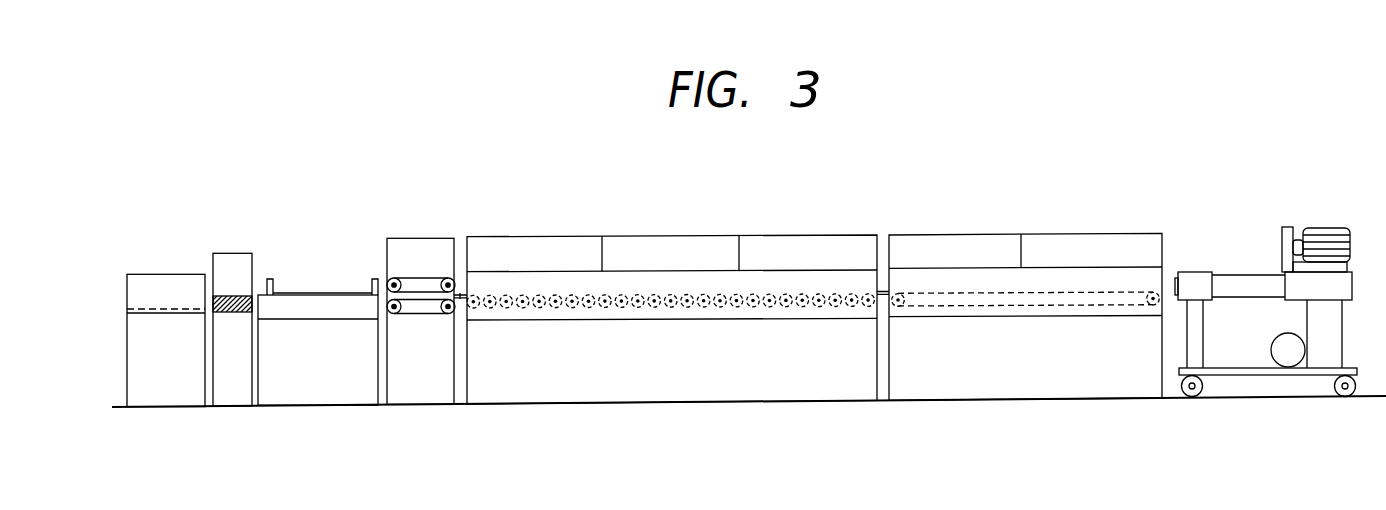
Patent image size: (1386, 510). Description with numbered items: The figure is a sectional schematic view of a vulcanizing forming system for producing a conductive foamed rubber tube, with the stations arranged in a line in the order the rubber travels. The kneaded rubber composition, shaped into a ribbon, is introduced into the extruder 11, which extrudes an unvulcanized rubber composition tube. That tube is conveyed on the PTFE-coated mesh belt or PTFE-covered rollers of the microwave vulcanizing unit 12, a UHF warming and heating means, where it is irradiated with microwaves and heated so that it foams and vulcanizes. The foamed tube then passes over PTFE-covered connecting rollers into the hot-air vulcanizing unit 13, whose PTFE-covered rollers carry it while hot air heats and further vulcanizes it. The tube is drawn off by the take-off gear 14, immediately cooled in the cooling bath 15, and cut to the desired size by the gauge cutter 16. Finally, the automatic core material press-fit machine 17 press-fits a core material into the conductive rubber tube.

The extruder 11 is at (1247, 272).
The microwave vulcanizing unit 12 is at (1054, 235).
The hot-air vulcanizing unit 13 is at (684, 236).
The take-off gear 14 is at (424, 238).
The cooling bath 15 is at (316, 295).
The gauge cutter 16 is at (230, 253).
The automatic core material press-fit machine 17 is at (167, 272).